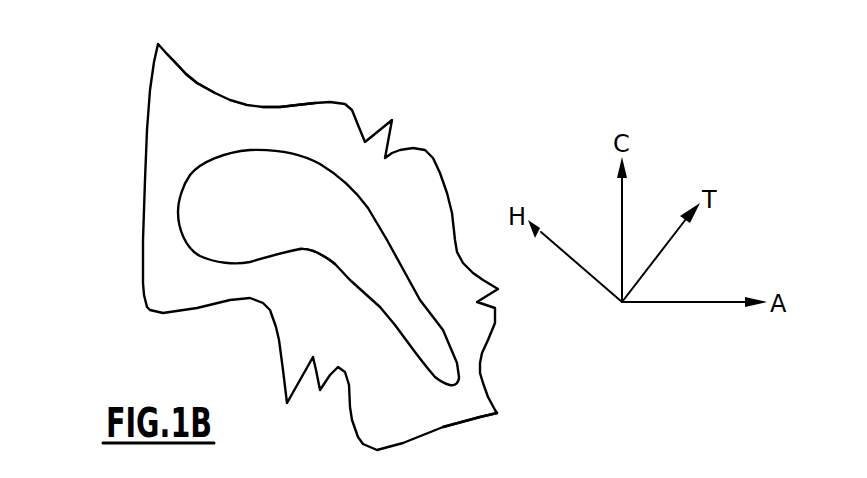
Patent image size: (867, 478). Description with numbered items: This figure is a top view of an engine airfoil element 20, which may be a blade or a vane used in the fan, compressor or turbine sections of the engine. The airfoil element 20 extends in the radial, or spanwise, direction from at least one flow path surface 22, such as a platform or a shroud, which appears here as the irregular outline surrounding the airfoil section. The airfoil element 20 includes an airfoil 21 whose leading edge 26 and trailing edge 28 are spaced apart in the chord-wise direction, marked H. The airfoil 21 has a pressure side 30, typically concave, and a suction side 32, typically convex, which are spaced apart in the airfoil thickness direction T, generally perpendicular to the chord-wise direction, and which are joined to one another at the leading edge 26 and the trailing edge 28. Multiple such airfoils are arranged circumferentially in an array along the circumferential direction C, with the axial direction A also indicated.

The engine airfoil element 20 is at (102, 68).
The airfoil 21 is at (280, 124).
The flow path surface 22 is at (185, 120).
The leading edge 26 is at (179, 222).
The trailing edge 28 is at (462, 384).
The pressure side 30 is at (325, 258).
The suction side 32 is at (303, 163).